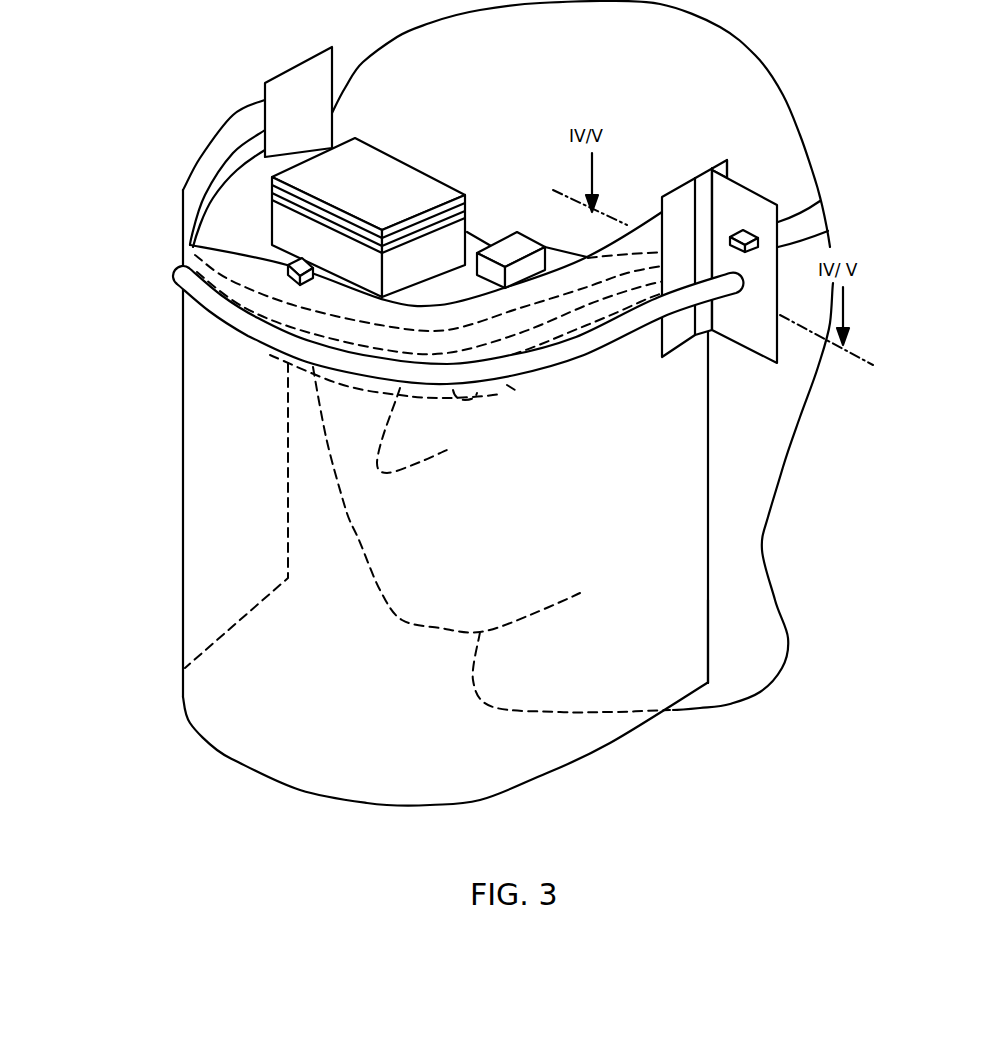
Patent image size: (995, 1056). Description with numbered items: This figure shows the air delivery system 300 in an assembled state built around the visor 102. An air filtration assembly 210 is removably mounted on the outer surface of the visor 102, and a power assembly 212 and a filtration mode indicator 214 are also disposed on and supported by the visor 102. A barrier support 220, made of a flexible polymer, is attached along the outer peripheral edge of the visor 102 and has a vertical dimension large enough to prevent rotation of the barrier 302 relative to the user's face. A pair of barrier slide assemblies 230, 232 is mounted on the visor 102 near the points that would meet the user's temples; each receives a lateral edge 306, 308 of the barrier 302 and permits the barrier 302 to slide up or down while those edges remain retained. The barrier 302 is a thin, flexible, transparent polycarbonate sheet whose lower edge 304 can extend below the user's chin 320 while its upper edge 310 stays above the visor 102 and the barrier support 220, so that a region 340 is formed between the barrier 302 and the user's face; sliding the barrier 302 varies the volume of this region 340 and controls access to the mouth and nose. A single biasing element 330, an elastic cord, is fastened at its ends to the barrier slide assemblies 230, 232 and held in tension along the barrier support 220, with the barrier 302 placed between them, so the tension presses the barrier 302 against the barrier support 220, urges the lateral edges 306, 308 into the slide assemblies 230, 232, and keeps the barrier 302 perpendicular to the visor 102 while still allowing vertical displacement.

The visor 102 is at (232, 217).
The air filtration assembly 210 is at (430, 125).
The power assembly 212 is at (503, 252).
The filtration mode indicator 214 is at (290, 262).
The barrier support 220 is at (242, 155).
The barrier slide assembly 230 is at (740, 133).
The barrier slide assembly 232 is at (283, 32).
The air delivery system 300 is at (120, 325).
The barrier 302 is at (183, 500).
The lower edge 304 is at (238, 762).
The lateral edge 306 is at (708, 622).
The lateral edge 308 is at (290, 553).
The upper edge 310 is at (183, 190).
The user's chin 320 is at (438, 603).
The biasing element 330 is at (577, 360).
The region 340 is at (257, 475).